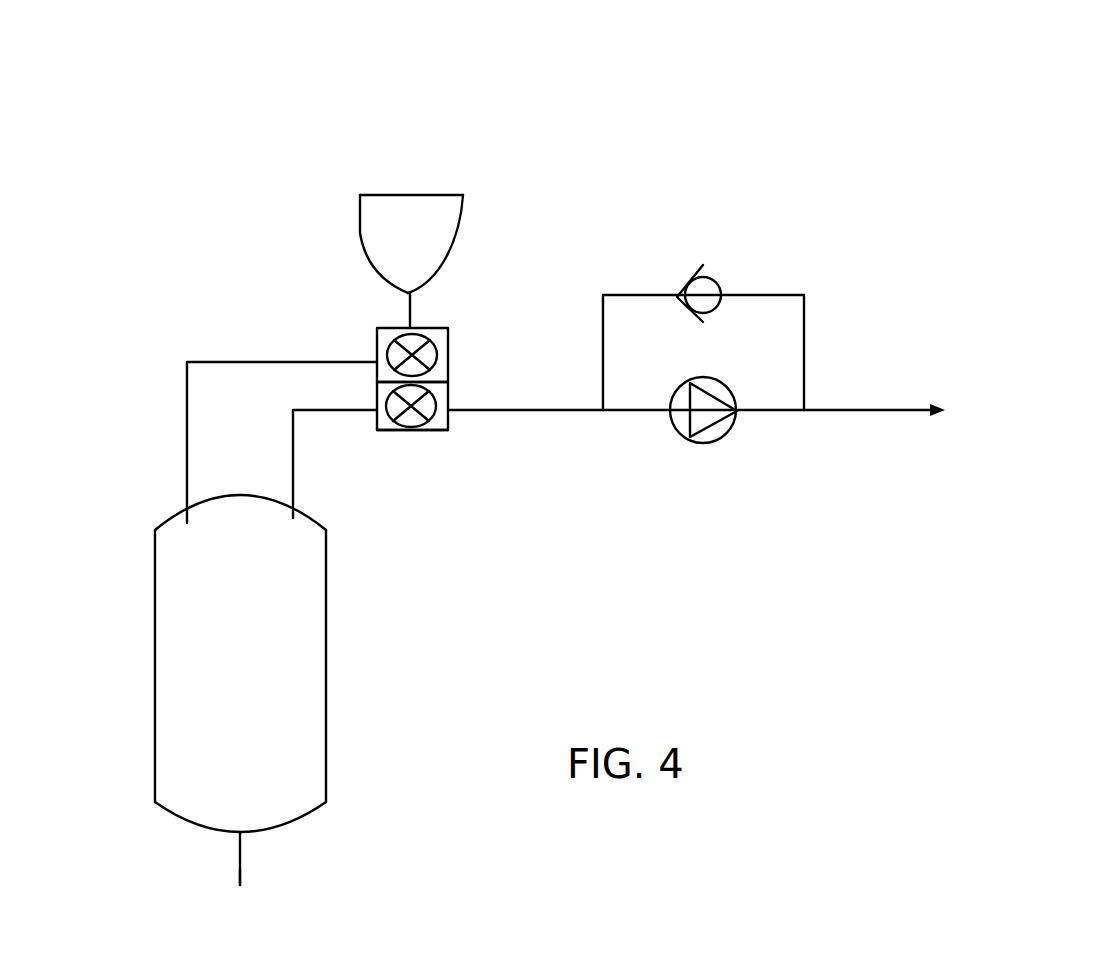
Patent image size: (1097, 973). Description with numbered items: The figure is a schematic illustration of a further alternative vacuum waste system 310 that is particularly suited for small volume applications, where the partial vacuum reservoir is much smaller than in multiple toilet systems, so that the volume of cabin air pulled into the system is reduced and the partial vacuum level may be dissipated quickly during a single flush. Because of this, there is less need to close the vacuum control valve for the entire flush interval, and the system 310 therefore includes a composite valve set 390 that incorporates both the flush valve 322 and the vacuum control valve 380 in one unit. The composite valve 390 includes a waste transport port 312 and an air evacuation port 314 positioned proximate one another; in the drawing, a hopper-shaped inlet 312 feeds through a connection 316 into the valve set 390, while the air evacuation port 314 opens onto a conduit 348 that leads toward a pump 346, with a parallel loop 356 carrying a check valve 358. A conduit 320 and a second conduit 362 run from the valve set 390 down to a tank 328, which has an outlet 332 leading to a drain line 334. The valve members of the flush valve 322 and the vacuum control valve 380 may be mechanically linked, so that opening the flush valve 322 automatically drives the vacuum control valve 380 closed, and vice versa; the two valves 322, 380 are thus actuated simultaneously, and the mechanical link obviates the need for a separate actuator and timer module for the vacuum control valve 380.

The vacuum waste system 310 is at (670, 124).
The waste transport port 312 is at (453, 224).
The hopper outlet 316 is at (403, 294).
The flush valve 322 is at (432, 355).
The air evacuation port 314 is at (452, 410).
The vacuum control valve 380 is at (428, 405).
The composite valve set 390 is at (407, 442).
The vent conduit 320 is at (217, 362).
The feed conduit 362 is at (293, 458).
The tank 328 is at (171, 677).
The tank outlet 332 is at (242, 833).
The outlet conduit 334 is at (238, 867).
The main conduit 348 is at (642, 422).
The recirculation loop 356 is at (637, 283).
The check valve 358 is at (710, 277).
The pump 346 is at (710, 430).